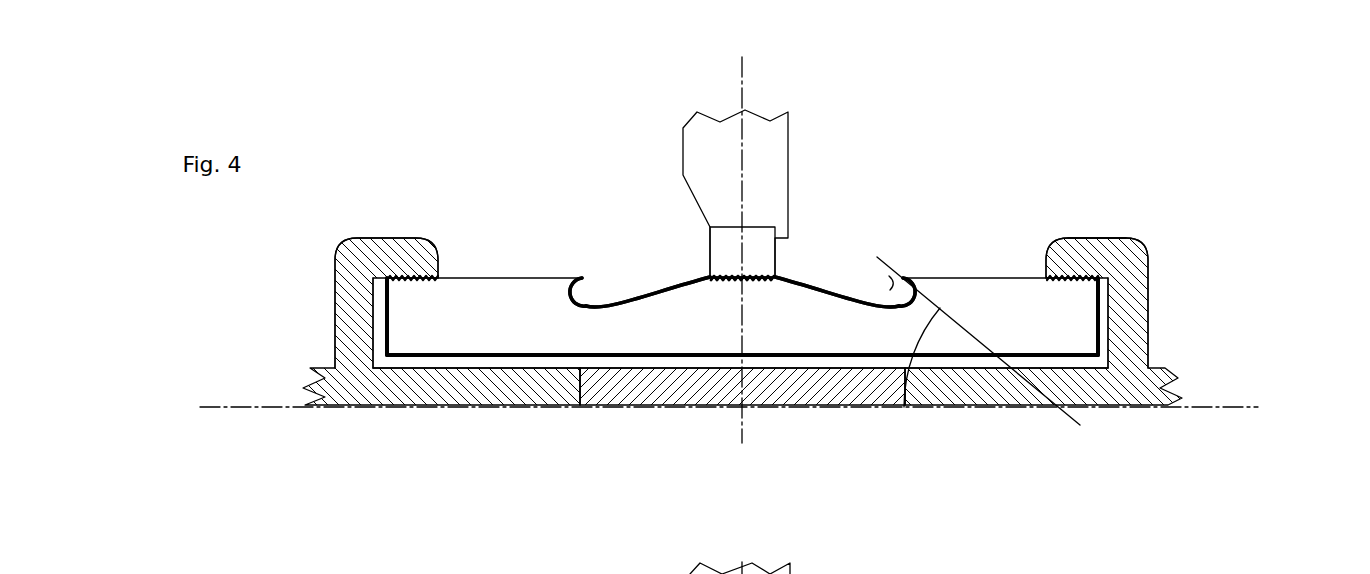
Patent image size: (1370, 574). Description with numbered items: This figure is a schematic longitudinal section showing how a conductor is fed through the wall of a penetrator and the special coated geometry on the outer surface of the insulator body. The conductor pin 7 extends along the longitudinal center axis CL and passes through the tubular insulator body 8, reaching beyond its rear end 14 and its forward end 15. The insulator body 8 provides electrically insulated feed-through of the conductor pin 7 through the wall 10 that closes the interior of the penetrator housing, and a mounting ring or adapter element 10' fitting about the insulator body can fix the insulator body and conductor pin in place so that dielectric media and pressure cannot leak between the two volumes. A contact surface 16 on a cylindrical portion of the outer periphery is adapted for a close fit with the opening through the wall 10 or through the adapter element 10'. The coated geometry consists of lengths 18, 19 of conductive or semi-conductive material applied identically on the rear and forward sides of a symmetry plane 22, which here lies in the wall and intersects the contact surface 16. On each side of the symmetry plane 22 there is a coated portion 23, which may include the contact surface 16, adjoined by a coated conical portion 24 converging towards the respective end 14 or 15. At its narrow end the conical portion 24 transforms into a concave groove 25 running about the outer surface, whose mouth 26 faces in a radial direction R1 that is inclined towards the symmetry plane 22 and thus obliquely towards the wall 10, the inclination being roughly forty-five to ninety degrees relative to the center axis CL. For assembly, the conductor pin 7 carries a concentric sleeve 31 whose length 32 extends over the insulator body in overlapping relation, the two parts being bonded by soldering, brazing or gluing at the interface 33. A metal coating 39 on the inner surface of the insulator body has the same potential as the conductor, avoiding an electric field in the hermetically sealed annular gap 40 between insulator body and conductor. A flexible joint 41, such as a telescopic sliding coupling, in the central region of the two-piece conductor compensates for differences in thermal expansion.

The conductor pin 7 is at (1172, 370).
The insulator body 8 is at (475, 297).
The wall 10 is at (761, 193).
The adapter element 10' is at (779, 252).
The rear end 14 is at (385, 320).
The forward end 15 is at (1103, 321).
The contact surface 16 is at (722, 271).
The coated length 18 is at (636, 297).
The coated length 19 is at (833, 291).
The symmetry plane 22 is at (744, 72).
The coated portion 23 is at (725, 280).
The coated conical portion 24 is at (648, 298).
The groove 25 is at (578, 308).
The mouth 26 is at (592, 292).
The sleeve 31 is at (332, 273).
The length 32 is at (1103, 237).
The interface 33 is at (1043, 275).
The metal coating 39 is at (387, 333).
The annular gap 40 is at (443, 362).
The flexible joint 41 is at (905, 411).
The radial direction R1 is at (877, 257).
The longitudinal center axis CL is at (1232, 407).